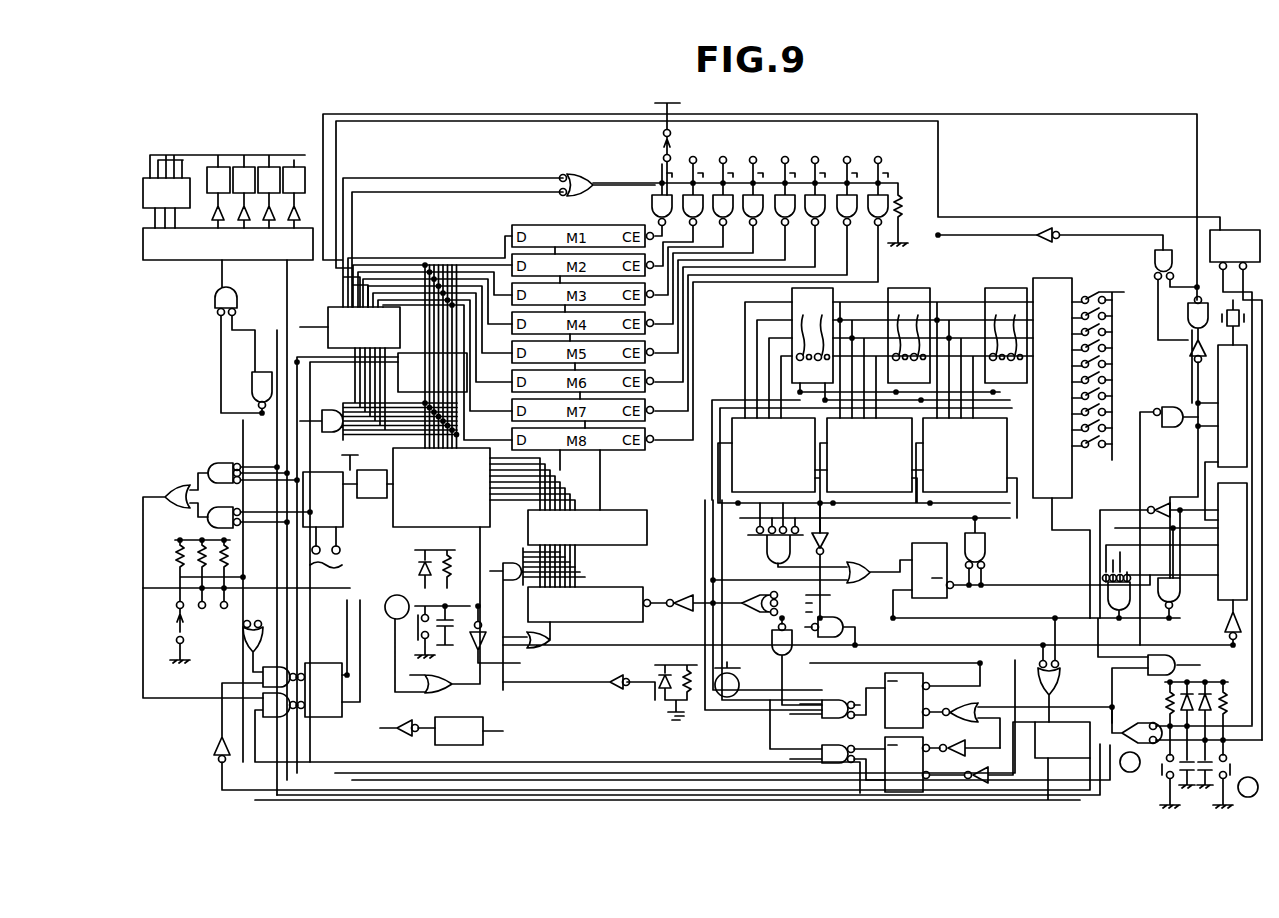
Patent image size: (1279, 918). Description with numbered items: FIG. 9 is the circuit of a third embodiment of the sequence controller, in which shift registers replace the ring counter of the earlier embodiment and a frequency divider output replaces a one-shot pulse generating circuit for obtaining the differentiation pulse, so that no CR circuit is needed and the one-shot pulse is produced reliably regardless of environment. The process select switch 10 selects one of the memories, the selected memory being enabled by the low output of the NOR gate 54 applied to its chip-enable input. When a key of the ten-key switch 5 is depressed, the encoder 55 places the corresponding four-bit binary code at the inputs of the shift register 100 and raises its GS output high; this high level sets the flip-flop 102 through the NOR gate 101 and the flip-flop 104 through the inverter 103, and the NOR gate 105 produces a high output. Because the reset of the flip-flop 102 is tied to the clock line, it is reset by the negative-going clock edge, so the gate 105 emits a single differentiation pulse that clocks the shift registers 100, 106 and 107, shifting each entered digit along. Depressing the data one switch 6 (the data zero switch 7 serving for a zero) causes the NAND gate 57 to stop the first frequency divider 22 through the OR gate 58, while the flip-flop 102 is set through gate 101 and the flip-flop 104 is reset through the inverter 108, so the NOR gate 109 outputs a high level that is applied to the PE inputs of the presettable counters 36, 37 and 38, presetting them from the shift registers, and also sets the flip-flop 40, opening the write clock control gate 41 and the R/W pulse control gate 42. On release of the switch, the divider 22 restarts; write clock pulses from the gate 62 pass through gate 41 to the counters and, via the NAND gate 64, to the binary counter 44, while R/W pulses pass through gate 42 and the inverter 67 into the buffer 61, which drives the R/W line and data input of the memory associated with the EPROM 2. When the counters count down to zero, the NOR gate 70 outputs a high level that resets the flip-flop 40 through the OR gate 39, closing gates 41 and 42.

The EPROM 2 is at (441, 487).
The ten-key switch 5 is at (1108, 281).
The data "1" switch 6 is at (1130, 762).
The data "0" switch 7 is at (1248, 787).
The process select switch 10 is at (663, 144).
The first frequency divider 22 is at (1232, 383).
The presettable counter 36 is at (965, 455).
The presettable counter 37 is at (869, 455).
The presettable counter 38 is at (773, 455).
The 2-input OR gate 39 is at (859, 562).
The flip-flop 40 is at (914, 544).
The write clock pulse control 2-input NOR gate 41 is at (984, 548).
The R/W pulse control gate 42 is at (1155, 263).
The binary counter 44 is at (585, 604).
The 2-input NOR gate 54 is at (652, 204).
The encoder 55 is at (1052, 388).
The 2-input NAND gate 57 is at (1139, 723).
The 2-input OR gate 58 is at (1186, 665).
The buffer 61 is at (587, 527).
The gate 62 is at (1172, 407).
The 3-input NAND gate 64 is at (758, 582).
The inverter 67 is at (1042, 244).
The 4-input NOR gate 70 is at (767, 546).
The shift register 100 is at (1000, 288).
The 2-input NOR gate 101 is at (975, 709).
The flip-flop 102 is at (925, 683).
The inverter 103 is at (990, 777).
The flip-flop 104 is at (885, 782).
The 2-input NOR gate 105 is at (839, 701).
The shift register 106 is at (912, 288).
The shift register 107 is at (790, 299).
The inverter 108 is at (960, 748).
The 2-input NOR gate 109 is at (839, 747).